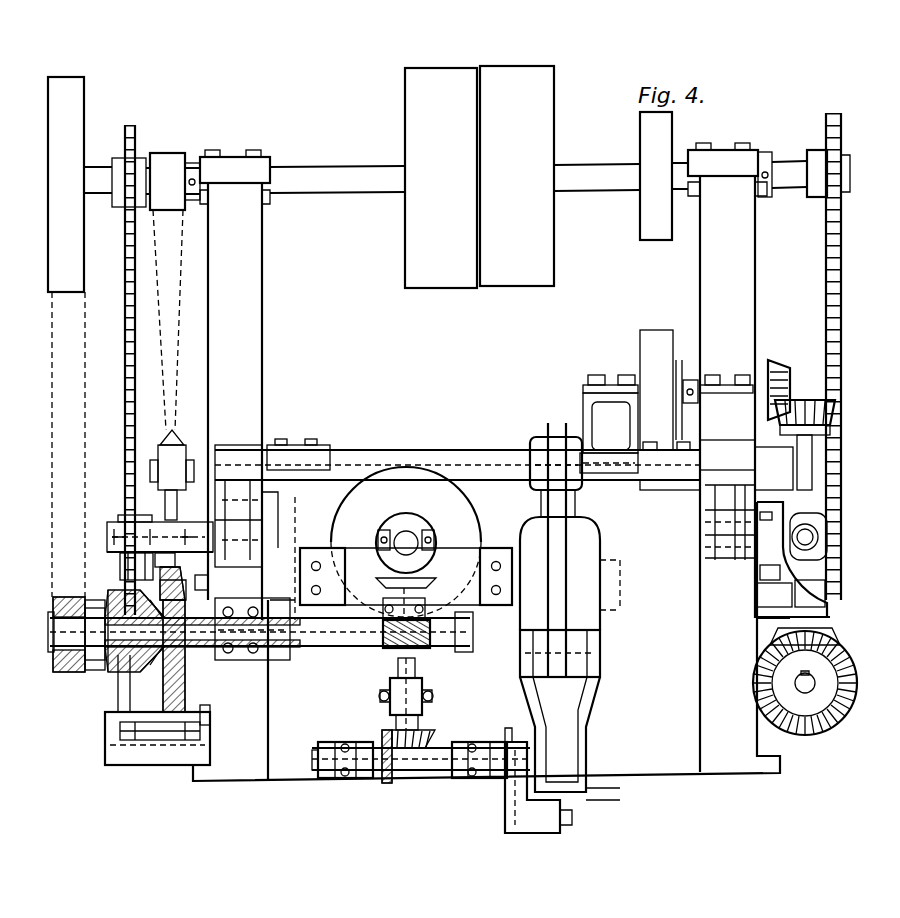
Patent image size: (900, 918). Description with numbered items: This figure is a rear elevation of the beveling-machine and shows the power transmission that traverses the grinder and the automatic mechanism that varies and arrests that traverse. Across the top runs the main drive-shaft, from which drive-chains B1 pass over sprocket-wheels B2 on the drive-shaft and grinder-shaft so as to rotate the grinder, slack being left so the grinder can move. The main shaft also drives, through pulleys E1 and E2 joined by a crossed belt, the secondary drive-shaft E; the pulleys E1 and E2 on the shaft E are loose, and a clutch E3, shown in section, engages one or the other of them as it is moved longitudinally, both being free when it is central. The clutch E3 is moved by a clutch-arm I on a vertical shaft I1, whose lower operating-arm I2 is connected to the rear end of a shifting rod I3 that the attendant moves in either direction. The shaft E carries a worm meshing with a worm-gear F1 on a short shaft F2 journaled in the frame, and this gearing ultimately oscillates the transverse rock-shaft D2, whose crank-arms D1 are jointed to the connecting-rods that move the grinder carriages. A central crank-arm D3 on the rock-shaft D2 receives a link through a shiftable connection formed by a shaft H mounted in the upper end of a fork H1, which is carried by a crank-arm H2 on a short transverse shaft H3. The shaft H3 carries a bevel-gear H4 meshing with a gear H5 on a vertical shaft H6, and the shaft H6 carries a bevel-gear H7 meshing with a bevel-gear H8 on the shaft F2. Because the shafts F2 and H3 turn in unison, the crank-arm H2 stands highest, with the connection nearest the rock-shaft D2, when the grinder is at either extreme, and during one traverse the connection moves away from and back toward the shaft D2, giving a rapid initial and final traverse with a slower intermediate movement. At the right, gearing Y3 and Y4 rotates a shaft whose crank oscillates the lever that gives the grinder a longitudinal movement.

The drive-chain B1 is at (606, 176).
The sprocket-wheel B2 is at (820, 152).
The pulley E1 is at (168, 160).
The pulley E2 is at (68, 683).
The clutch E3 is at (105, 662).
The secondary drive-shaft E is at (335, 633).
The clutch-arm I is at (113, 607).
The vertical shaft I1 is at (118, 690).
The operating-arm I2 is at (133, 713).
The shifting rod I3 is at (200, 725).
The crank-arm D1 is at (163, 458).
The transverse rock-shaft D2 is at (380, 460).
The central crank-arm D3 is at (568, 558).
The worm-gear F1 is at (474, 510).
The short shaft F2 is at (403, 530).
The bevel-gear H8 is at (425, 528).
The bevel-gear H7 is at (426, 578).
The vertical shaft H6 is at (417, 667).
The bevel-gear H5 is at (433, 727).
The bevel-gear H4 is at (383, 777).
The short transverse shaft H3 is at (437, 760).
The crank-arm H2 is at (517, 793).
The link or fork H1 is at (583, 733).
The shaft H is at (600, 640).
The gearing Y4 is at (790, 392).
The gearing Y3 is at (830, 637).